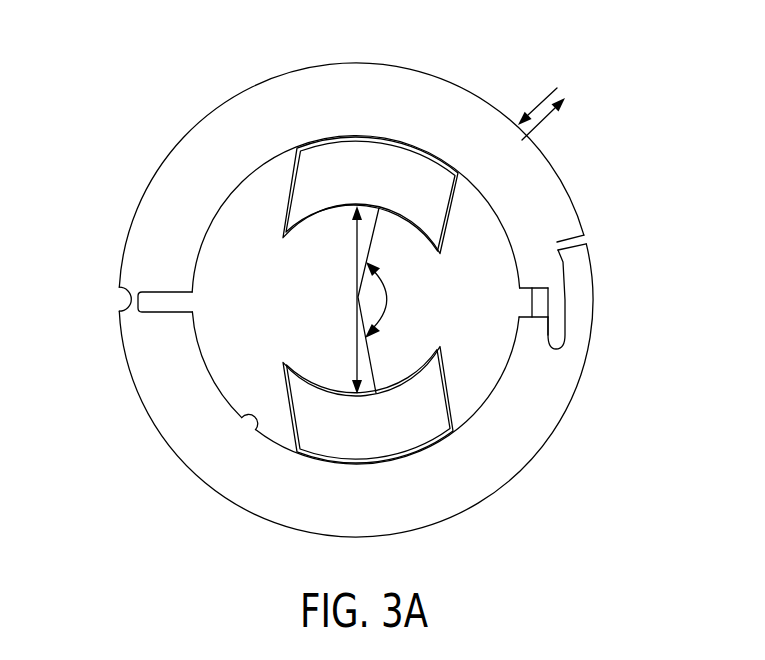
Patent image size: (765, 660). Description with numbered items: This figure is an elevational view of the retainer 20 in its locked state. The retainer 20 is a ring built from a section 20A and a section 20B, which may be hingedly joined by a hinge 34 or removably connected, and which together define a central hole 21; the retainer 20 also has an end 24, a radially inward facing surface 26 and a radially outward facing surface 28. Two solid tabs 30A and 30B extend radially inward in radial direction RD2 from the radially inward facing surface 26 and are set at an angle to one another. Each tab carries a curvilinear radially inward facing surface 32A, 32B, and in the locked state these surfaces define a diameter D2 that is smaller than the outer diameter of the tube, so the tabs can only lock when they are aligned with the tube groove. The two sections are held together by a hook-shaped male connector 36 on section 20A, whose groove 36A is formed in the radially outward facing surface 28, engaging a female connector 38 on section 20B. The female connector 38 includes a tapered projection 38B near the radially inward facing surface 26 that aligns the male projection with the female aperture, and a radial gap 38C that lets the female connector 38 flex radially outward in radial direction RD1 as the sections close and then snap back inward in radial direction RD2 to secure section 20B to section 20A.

The retainer 20 is at (362, 282).
The section 20A is at (247, 118).
The section 20B is at (180, 443).
The hole 21 is at (222, 253).
The end 24 is at (152, 383).
The radially inward facing surface 26 is at (262, 427).
The radially outward facing surface 28 is at (356, 268).
The tab 30A is at (370, 191).
The tab 30B is at (389, 436).
The radially inward facing surface 32A is at (317, 222).
The radially inward facing surface 32B is at (313, 385).
The hinge 34 is at (100, 298).
The male connector 36 is at (599, 244).
The groove 36A is at (584, 235).
The female connector 38 is at (604, 354).
The projection 38B is at (541, 307).
The radial gap 38C is at (570, 350).
The radial direction RD1 is at (548, 116).
The radial direction RD2 is at (543, 97).
The diameter D2 is at (357, 273).